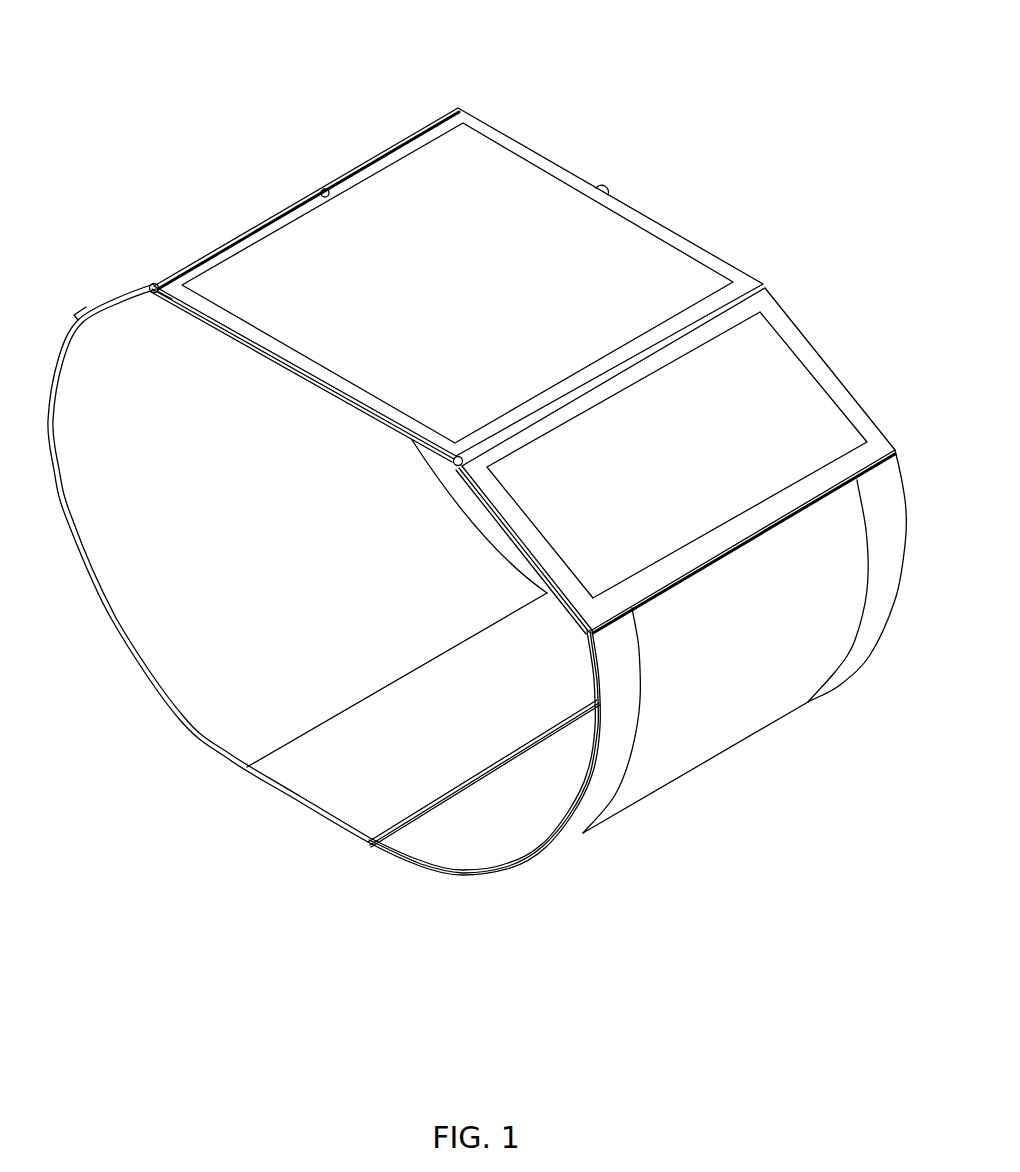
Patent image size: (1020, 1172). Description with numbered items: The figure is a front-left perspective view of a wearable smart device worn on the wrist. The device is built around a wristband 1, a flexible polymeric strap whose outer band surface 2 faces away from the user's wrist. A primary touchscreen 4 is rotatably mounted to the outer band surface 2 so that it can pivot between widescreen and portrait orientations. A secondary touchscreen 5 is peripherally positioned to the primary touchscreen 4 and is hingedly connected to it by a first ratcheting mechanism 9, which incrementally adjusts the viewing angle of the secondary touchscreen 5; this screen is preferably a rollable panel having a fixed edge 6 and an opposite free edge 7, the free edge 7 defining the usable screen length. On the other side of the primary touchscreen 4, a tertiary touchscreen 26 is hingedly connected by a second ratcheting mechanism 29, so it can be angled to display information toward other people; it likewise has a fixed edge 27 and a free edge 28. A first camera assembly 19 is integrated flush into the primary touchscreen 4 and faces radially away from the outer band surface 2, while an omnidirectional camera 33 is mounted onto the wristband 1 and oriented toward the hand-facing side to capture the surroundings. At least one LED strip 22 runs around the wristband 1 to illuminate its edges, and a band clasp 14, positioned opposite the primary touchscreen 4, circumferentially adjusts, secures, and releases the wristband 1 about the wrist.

The wristband 1 is at (201, 638).
The outer band surface 2 is at (715, 732).
The primary touchscreen 4 is at (447, 290).
The secondary touchscreen 5 is at (673, 466).
The fixed edge 6 is at (786, 300).
The free edge 7 is at (882, 419).
The first ratcheting mechanism 9 is at (449, 471).
The band clasp 14 is at (444, 730).
The first camera assembly 19 is at (324, 188).
The LED strip 22 is at (603, 787).
The tertiary touchscreen 26 is at (403, 132).
The fixed edge 27 is at (147, 281).
The free edge 28 is at (86, 305).
The second ratcheting mechanism 29 is at (160, 302).
The omnidirectional camera 33 is at (608, 181).